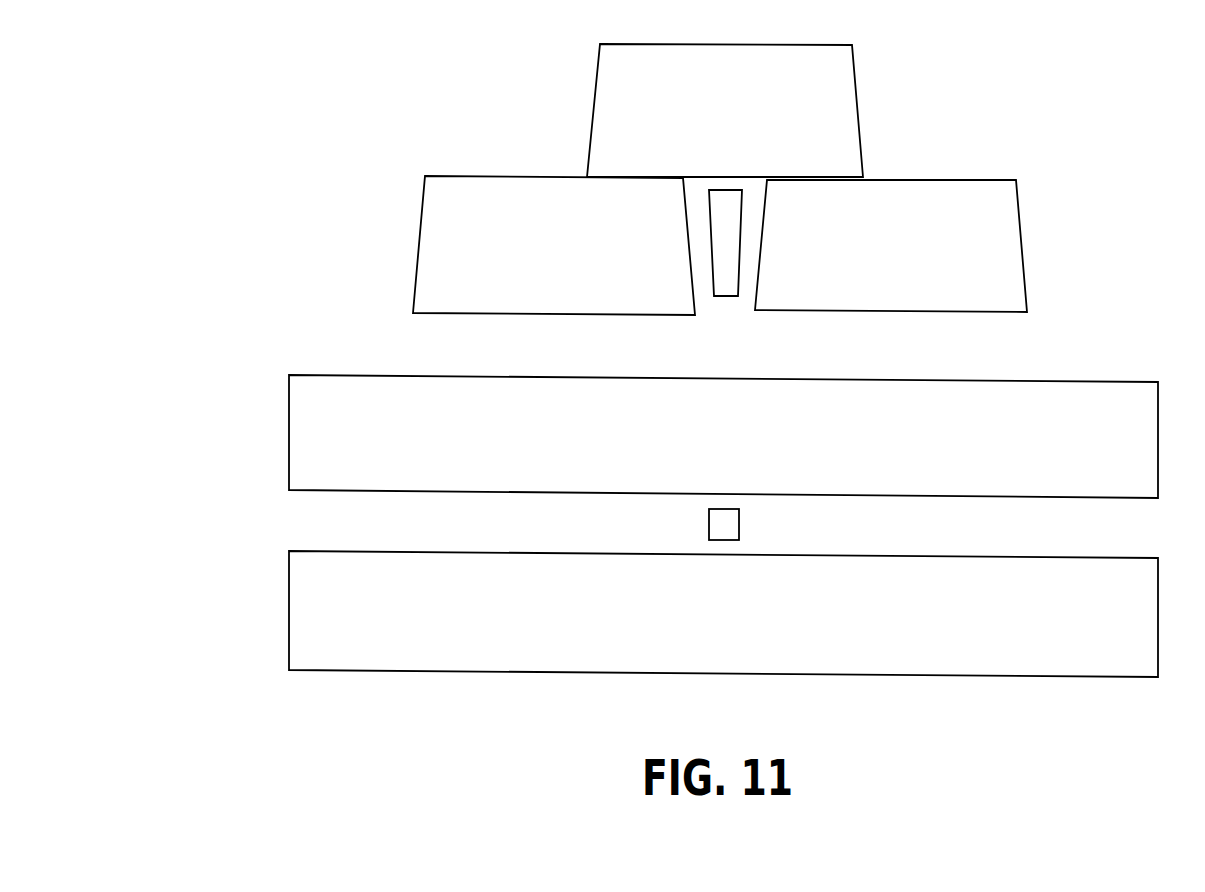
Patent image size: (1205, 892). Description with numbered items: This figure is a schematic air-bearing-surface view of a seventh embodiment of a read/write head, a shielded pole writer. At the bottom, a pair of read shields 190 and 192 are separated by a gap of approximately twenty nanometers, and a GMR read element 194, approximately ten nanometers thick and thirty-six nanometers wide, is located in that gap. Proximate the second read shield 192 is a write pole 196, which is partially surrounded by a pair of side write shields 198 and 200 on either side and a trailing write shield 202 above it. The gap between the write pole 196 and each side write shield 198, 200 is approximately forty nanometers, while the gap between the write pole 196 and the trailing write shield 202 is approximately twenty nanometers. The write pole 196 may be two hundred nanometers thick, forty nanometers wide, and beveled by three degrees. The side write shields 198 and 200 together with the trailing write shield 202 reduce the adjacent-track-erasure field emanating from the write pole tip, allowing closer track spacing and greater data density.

The read shield 190 is at (289, 590).
The second read shield 192 is at (289, 412).
The GMR read element 194 is at (741, 523).
The write pole 196 is at (728, 297).
The side write shield 198 is at (418, 230).
The side write shield 200 is at (1023, 237).
The trailing write shield 202 is at (597, 90).